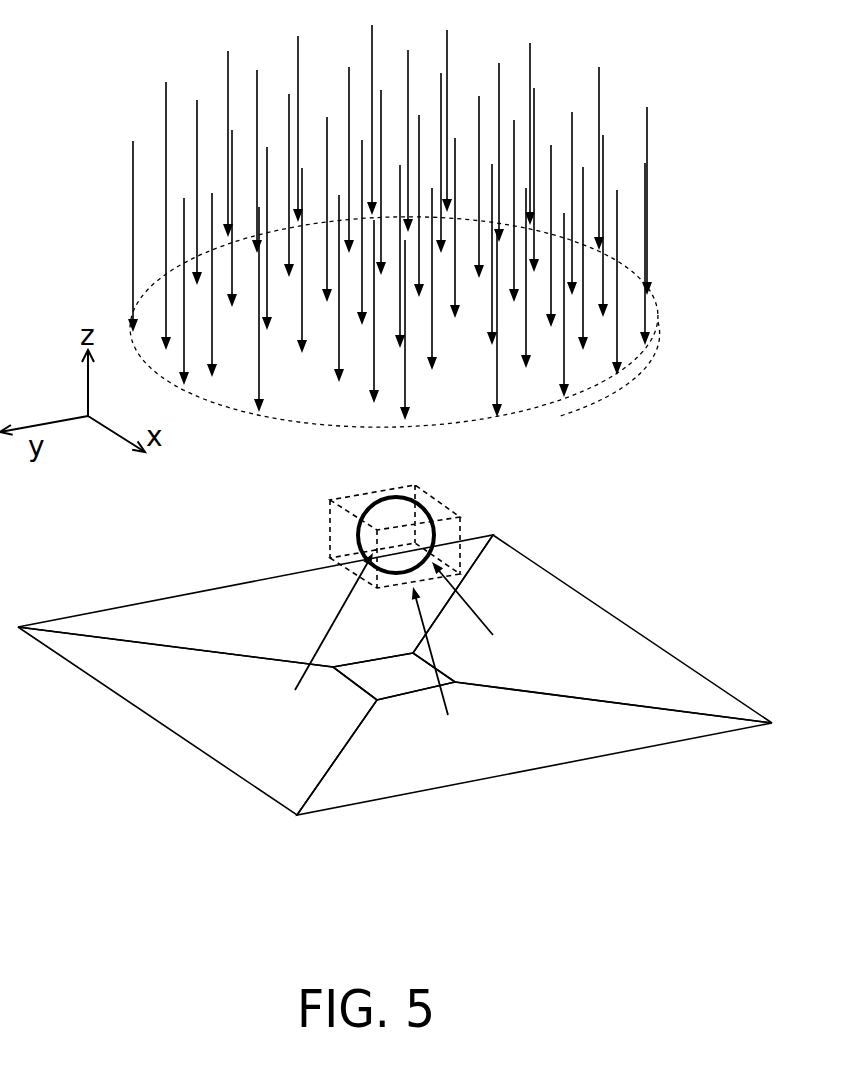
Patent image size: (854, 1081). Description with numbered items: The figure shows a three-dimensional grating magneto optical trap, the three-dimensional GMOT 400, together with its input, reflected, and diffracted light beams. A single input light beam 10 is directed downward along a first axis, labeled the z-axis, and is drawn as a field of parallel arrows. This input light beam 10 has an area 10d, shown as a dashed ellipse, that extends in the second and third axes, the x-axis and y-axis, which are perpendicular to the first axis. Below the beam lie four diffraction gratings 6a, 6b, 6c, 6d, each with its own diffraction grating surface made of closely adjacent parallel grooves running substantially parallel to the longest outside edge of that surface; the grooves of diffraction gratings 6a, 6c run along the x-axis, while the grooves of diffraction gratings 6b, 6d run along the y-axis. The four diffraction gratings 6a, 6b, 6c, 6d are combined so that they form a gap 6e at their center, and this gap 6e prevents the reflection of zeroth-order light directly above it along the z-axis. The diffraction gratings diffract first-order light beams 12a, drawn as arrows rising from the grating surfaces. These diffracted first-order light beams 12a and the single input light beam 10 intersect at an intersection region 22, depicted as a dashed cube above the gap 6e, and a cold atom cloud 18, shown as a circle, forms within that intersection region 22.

The 3D GMOT 400 is at (692, 107).
The input light beam 10 is at (648, 303).
The area 10d is at (607, 385).
The intersection region 22 is at (328, 510).
The cold atom cloud 18 is at (432, 517).
The first-order light beams 12a is at (372, 556).
The diffraction grating 6a is at (238, 778).
The diffraction grating 6b is at (601, 756).
The diffraction grating 6c is at (657, 646).
The diffraction grating 6d is at (130, 605).
The gap 6e is at (442, 674).